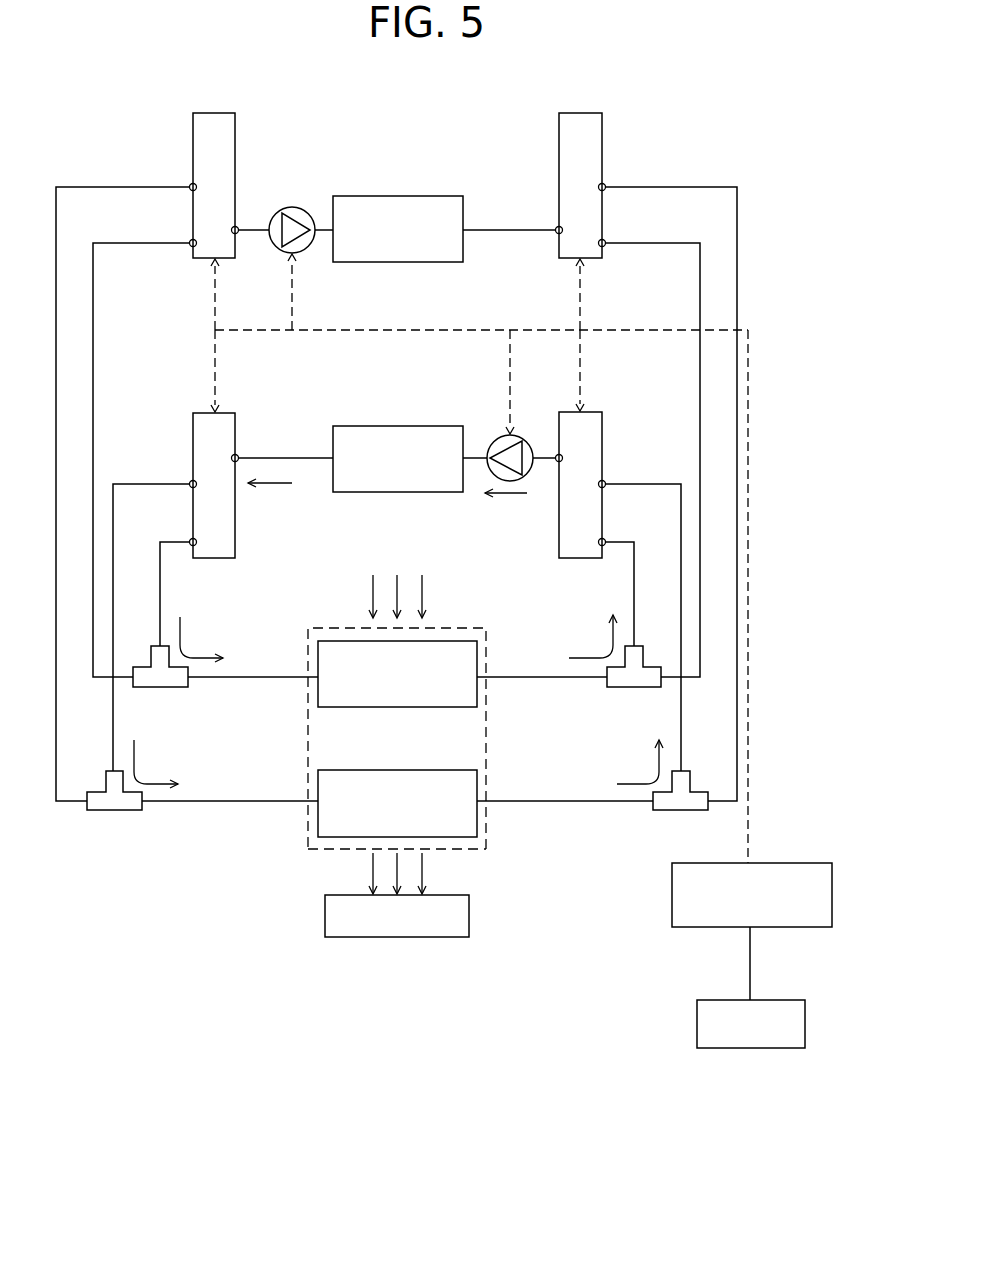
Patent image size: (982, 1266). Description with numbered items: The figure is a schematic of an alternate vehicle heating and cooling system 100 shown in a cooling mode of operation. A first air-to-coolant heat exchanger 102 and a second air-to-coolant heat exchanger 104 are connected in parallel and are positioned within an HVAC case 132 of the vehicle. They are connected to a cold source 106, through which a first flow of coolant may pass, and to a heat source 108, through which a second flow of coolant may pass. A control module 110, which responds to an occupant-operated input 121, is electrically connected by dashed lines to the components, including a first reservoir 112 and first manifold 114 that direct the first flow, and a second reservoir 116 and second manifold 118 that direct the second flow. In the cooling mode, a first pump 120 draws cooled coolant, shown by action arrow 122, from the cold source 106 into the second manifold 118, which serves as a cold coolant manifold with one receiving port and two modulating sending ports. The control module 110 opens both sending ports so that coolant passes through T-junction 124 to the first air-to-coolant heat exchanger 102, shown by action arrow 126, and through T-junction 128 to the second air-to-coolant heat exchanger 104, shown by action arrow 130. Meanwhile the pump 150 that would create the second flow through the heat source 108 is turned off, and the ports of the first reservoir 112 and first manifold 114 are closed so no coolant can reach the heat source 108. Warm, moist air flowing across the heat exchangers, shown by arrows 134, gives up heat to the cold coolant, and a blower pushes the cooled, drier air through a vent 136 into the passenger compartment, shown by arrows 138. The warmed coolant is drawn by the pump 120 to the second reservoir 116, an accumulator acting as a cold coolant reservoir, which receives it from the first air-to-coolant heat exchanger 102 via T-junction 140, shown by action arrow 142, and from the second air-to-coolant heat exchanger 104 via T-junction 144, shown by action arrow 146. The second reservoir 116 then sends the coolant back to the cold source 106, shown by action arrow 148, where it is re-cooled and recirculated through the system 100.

The vehicle heating and cooling system 100 is at (456, 133).
The first air-to-coolant heat exchanger 102 is at (455, 641).
The second air-to-coolant heat exchanger 104 is at (391, 770).
The cold source 106 is at (392, 426).
The heat source 108 is at (388, 196).
The control module 110 is at (800, 927).
The first reservoir 112 is at (193, 135).
The first manifold 114 is at (602, 140).
The second reservoir 116 is at (596, 412).
The second manifold 118 is at (197, 413).
The first pump 120 is at (523, 441).
The input 121 is at (727, 1048).
The action arrow 122 is at (276, 484).
The T-junction 124 is at (175, 688).
The action arrow 126 is at (190, 655).
The T-junction 128 is at (106, 812).
The action arrow 130 is at (144, 780).
The HVAC case 132 is at (308, 820).
The arrows 134 is at (373, 590).
The vent 136 is at (471, 849).
The arrows 138 is at (370, 868).
The T-junction 140 is at (622, 688).
The action arrow 142 is at (598, 656).
The T-junction 144 is at (668, 812).
The action arrow 146 is at (646, 782).
The action arrow 148 is at (503, 494).
The pump 150 is at (303, 250).